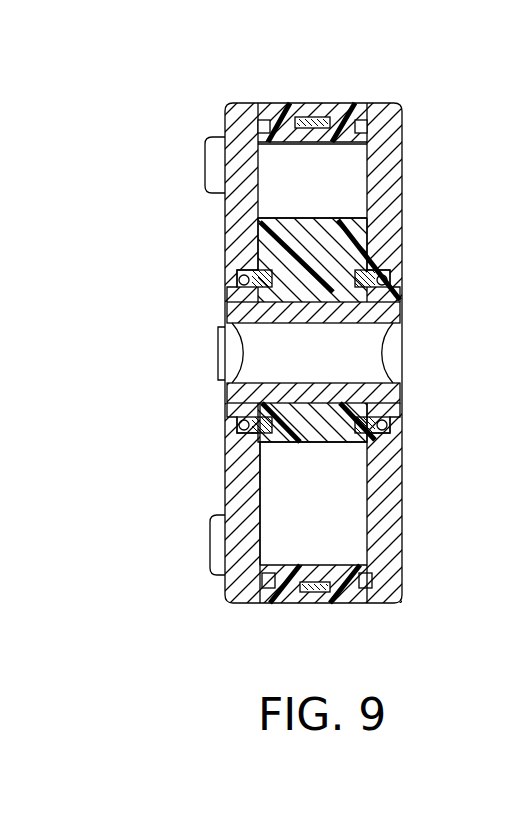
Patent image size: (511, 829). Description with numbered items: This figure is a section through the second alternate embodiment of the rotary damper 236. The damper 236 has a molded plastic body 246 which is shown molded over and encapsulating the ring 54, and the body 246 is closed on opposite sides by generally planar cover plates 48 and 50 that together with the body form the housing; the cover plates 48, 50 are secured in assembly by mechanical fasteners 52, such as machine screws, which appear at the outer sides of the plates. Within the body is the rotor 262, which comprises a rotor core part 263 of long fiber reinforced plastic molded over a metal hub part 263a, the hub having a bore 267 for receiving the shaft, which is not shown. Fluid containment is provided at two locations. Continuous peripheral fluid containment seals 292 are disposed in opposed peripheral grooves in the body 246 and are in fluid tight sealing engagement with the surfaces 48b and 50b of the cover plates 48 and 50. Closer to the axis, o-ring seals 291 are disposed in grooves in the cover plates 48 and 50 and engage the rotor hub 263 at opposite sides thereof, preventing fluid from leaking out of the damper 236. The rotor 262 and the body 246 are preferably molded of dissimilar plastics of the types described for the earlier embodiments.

The rotary damper 236 is at (314, 92).
The body 246 is at (276, 110).
The ring 54 is at (320, 118).
The peripheral fluid containment seals 292 is at (262, 126).
The cover plate 48 is at (395, 147).
The surface of cover plate 48b is at (392, 208).
The o-ring seals 291 is at (240, 282).
The bore 267 is at (390, 325).
The metal hub part 263a is at (390, 380).
The rotor core part 263 is at (327, 433).
The rotor 262 is at (330, 473).
The cover plate 50 is at (230, 597).
The surface of cover plate 50b is at (263, 472).
The mechanical fasteners 52 is at (212, 180).